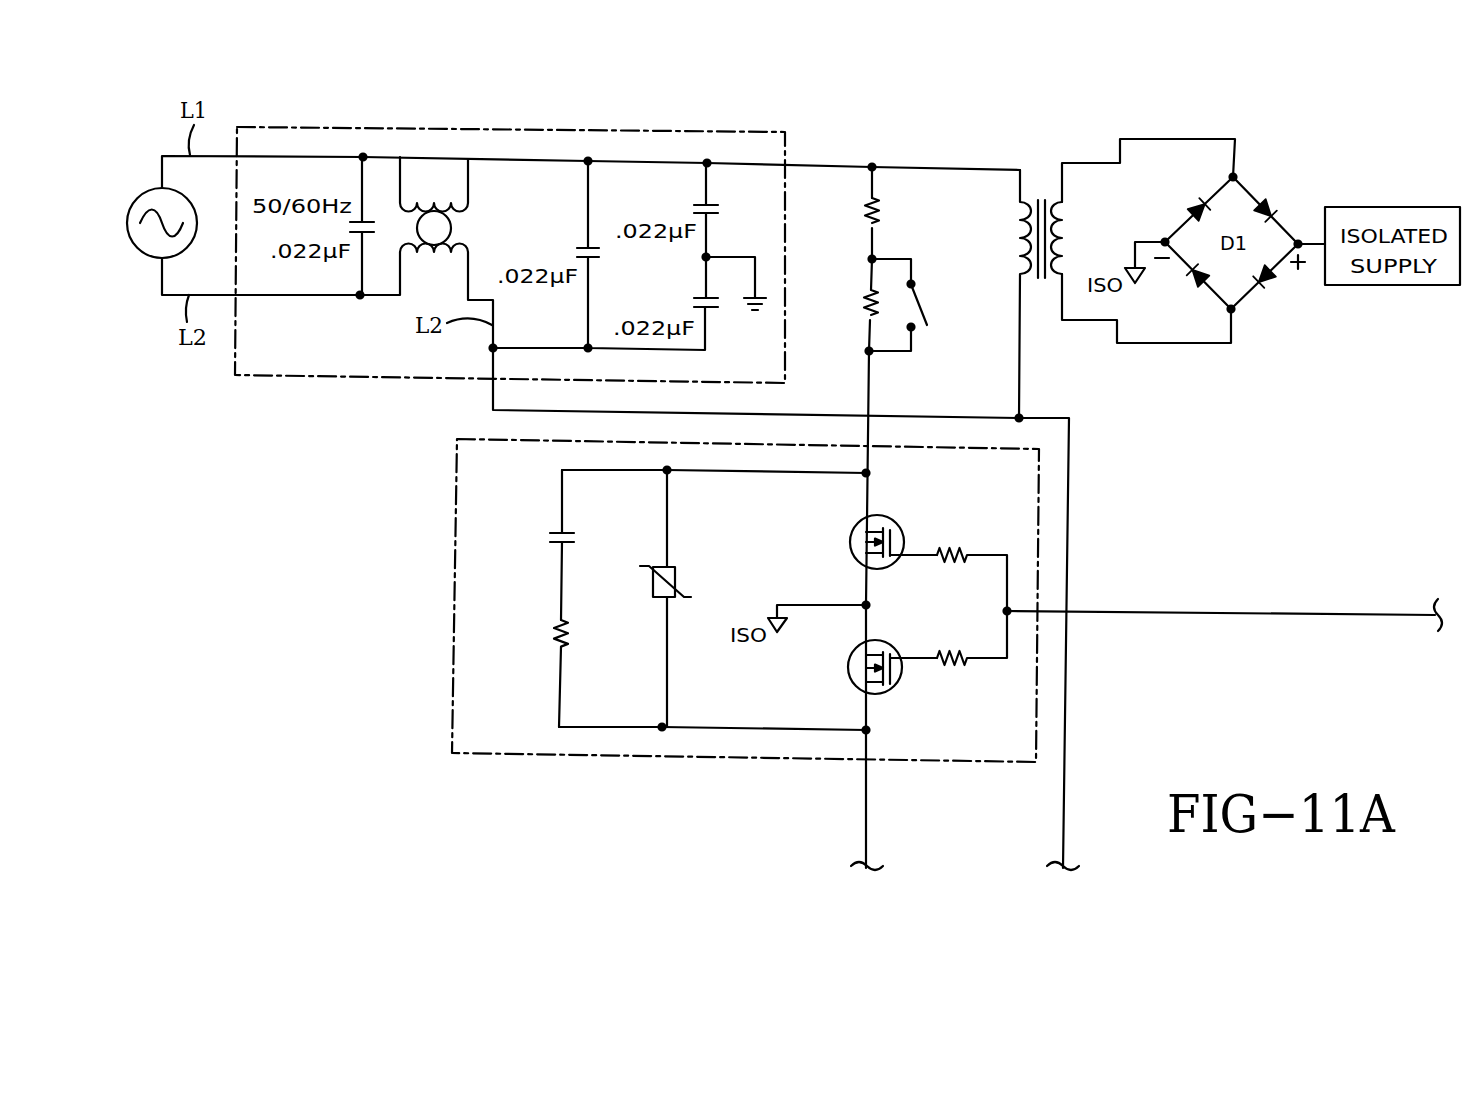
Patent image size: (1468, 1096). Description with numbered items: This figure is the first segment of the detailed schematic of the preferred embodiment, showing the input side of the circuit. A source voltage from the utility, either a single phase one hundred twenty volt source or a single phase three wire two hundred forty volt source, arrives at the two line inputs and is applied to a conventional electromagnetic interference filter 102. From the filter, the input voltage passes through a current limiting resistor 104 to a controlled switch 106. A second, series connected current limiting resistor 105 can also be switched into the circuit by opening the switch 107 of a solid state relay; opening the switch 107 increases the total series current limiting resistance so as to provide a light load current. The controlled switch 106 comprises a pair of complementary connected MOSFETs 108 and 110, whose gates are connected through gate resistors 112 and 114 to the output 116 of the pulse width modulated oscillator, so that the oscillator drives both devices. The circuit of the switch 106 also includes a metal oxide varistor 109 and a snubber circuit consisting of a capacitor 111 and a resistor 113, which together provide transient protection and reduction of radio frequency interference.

The electromagnetic interference filter 102 is at (308, 128).
The current limiting resistor 104 is at (880, 207).
The second current limiting resistor 105 is at (867, 320).
The controlled switch 106 is at (538, 755).
The switch of a solid state relay 107 is at (923, 303).
The MOSFET 108 is at (855, 525).
The metal oxide varistor 109 is at (658, 600).
The MOSFET 110 is at (880, 695).
The capacitor 111 is at (557, 533).
The gate resistor 112 is at (950, 545).
The resistor 113 is at (558, 650).
The gate resistor 114 is at (950, 648).
The output of the pulse width modulated oscillator 116 is at (1117, 610).